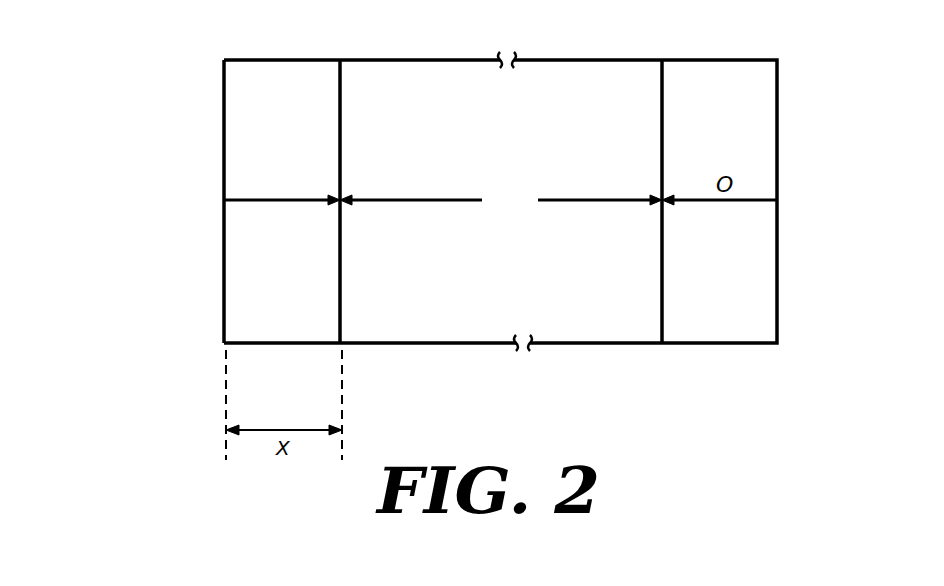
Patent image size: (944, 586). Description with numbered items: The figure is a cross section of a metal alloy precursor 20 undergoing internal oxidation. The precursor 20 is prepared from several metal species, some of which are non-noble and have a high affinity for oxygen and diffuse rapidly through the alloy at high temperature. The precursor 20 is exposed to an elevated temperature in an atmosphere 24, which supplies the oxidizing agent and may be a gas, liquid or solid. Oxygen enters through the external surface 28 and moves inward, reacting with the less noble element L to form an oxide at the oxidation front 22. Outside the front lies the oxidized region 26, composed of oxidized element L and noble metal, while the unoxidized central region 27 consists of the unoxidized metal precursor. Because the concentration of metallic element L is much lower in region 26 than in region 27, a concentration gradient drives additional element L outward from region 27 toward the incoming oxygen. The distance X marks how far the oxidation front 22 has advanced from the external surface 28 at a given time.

The metal alloy precursor 20 is at (413, 353).
The oxidation front 22 is at (342, 310).
The atmosphere 24 is at (91, 202).
The oxidized region 26 is at (263, 84).
The unoxidized central region 27 is at (440, 92).
The external surface 28 is at (224, 268).